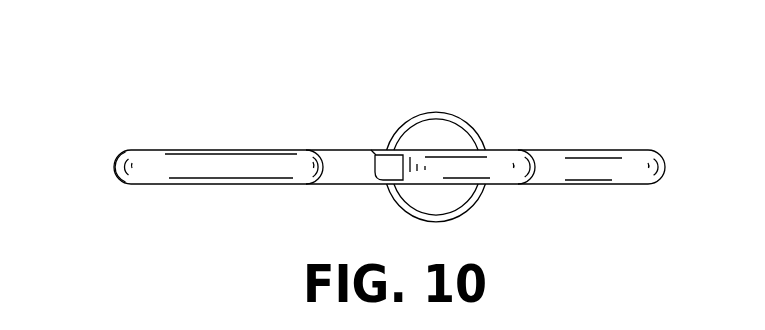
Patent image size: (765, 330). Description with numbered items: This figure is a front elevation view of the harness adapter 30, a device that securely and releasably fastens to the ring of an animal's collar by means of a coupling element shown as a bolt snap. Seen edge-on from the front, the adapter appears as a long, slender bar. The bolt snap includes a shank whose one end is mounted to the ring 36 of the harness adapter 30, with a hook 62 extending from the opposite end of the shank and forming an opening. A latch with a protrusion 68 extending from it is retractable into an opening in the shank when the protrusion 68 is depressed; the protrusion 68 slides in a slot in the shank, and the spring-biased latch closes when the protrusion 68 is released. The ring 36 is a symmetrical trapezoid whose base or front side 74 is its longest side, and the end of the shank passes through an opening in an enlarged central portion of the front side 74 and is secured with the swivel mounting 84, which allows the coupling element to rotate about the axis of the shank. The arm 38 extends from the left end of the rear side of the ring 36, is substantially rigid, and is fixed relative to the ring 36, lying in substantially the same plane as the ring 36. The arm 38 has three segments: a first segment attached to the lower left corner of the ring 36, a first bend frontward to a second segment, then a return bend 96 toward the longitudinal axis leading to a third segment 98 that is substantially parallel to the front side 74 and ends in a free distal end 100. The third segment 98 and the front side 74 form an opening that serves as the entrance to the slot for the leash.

The harness adapter 30 is at (591, 76).
The ring 36 is at (619, 181).
The arm 38 is at (195, 160).
The hook 62 is at (507, 181).
The protrusion 68 is at (372, 151).
The front side 74 is at (625, 167).
The swivel mounting 84 is at (472, 120).
The return bend 96 is at (116, 169).
The third segment 98 is at (222, 170).
The free distal end 100 is at (327, 177).